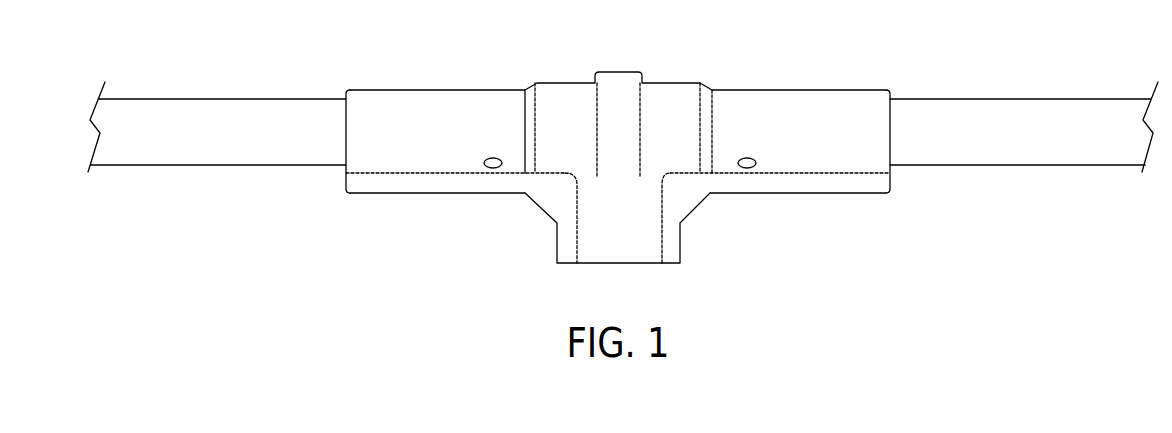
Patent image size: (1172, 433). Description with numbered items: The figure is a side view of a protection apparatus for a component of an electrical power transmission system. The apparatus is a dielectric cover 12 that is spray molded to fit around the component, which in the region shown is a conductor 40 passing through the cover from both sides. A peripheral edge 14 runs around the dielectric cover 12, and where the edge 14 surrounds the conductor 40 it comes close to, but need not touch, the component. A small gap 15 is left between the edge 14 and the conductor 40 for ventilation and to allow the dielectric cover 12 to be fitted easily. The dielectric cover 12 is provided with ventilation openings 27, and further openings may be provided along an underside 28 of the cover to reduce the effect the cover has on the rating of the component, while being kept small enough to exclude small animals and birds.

The dielectric cover 12 is at (503, 90).
The peripheral edge 14 is at (368, 195).
The gap 15 is at (346, 94).
The ventilation openings 27 is at (485, 165).
The underside 28 is at (532, 194).
The conductor 40 is at (227, 98).